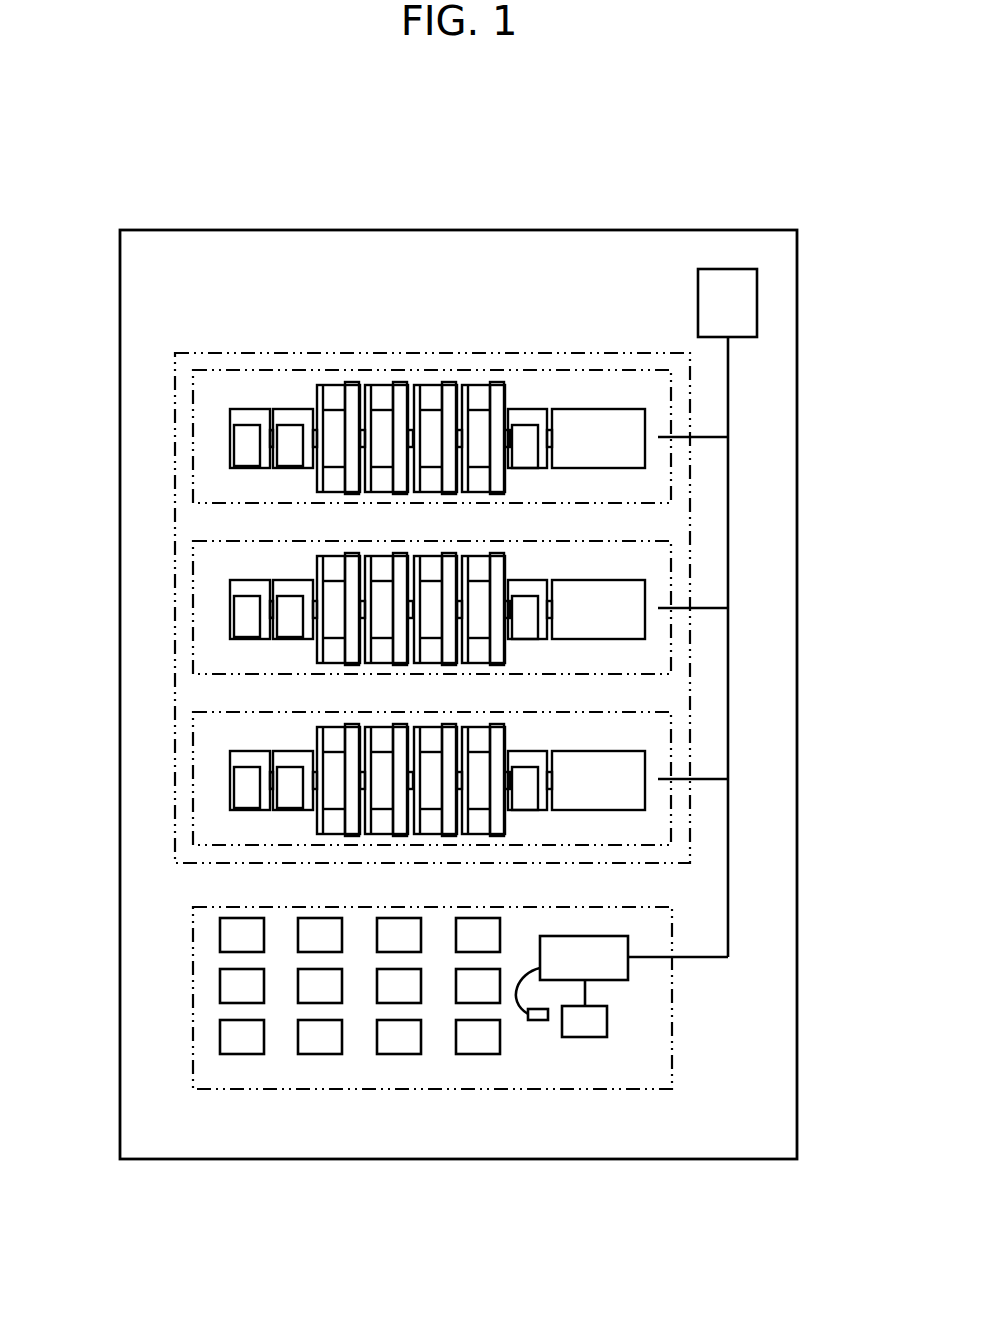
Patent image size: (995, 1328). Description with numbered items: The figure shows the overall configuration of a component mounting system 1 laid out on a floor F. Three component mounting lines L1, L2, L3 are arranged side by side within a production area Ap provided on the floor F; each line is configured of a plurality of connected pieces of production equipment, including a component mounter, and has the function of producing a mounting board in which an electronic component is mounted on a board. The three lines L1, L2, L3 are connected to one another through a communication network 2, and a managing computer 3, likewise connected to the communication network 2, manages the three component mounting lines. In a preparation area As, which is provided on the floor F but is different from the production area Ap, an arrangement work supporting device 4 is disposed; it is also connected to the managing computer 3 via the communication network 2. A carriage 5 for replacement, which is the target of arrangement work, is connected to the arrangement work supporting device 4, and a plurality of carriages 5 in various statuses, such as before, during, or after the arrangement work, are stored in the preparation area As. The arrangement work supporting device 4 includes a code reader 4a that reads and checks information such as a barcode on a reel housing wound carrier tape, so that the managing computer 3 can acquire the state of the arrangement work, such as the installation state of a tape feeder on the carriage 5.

The component mounting system 1 is at (505, 118).
The floor F is at (713, 230).
The communication network 2 is at (729, 503).
The managing computer 3 is at (757, 302).
The production area Ap is at (173, 512).
The component mounting line L1 is at (670, 407).
The component mounting line L2 is at (670, 578).
The component mounting line L3 is at (672, 752).
The preparation area As is at (190, 1008).
The arrangement work supporting device 4 is at (617, 970).
The code reader 4a is at (536, 1021).
The carriage 5 is at (388, 935).